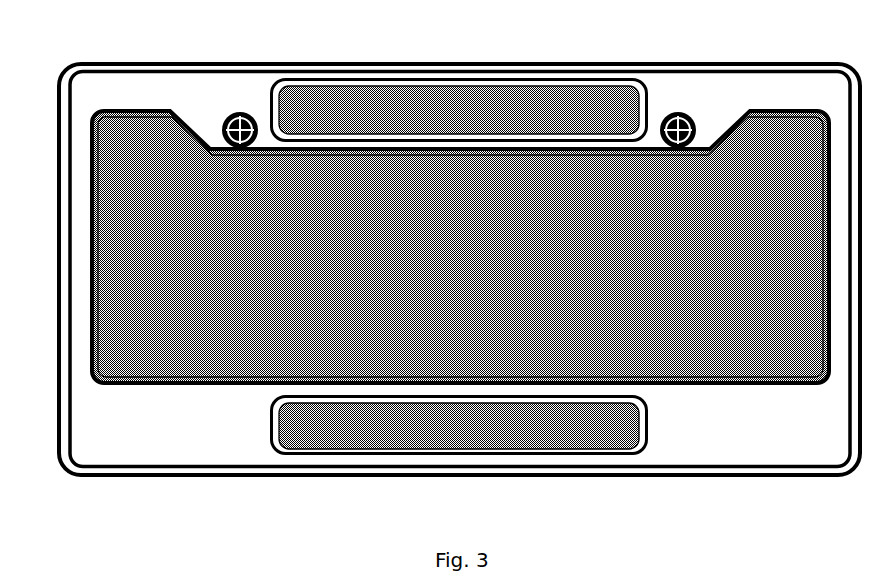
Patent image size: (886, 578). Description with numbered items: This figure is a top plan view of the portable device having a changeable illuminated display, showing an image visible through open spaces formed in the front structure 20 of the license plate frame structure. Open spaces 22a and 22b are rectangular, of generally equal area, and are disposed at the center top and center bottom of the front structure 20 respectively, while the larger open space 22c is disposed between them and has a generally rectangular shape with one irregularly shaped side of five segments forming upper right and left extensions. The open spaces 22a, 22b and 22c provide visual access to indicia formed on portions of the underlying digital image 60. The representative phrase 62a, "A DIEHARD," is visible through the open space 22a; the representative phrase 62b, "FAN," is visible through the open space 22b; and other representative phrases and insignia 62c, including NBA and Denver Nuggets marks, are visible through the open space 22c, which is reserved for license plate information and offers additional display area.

The front structure 20 is at (158, 92).
The open space 22a is at (459, 84).
The representative phrase 62a is at (458, 130).
The open space 22b is at (467, 454).
The representative phrase 62b is at (407, 428).
The open space 22c is at (442, 204).
The representative phrases and insignia 62c is at (225, 279).
The digital image 60 is at (785, 137).